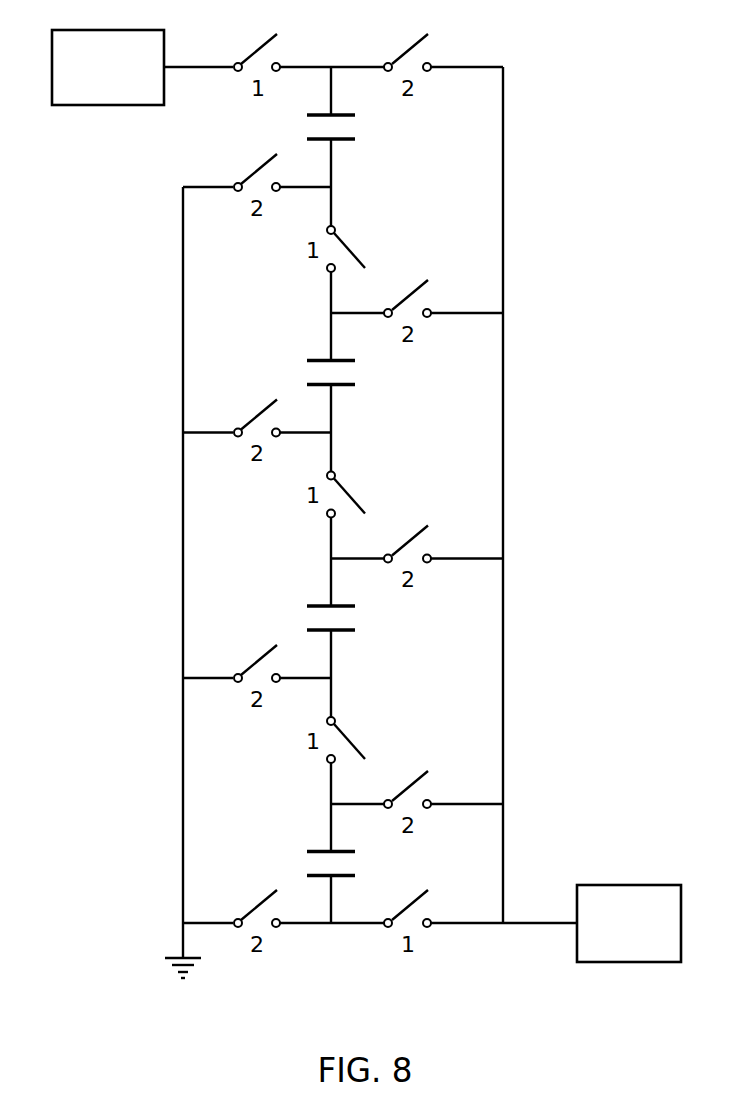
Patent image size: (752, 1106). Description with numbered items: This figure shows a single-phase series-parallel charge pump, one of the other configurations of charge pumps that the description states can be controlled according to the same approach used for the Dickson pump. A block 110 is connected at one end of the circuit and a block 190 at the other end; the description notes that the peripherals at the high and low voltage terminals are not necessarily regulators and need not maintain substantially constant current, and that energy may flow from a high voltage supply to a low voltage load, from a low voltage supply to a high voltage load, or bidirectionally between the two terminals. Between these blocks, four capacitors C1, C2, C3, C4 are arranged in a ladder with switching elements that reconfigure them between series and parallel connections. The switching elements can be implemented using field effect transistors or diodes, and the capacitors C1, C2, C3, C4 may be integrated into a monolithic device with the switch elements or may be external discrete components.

The power supply 110 is at (89, 80).
The load 190 is at (610, 936).
The first capacitor C1 is at (349, 127).
The second capacitor C2 is at (349, 372).
The third capacitor C3 is at (349, 618).
The fourth capacitor C4 is at (349, 863).